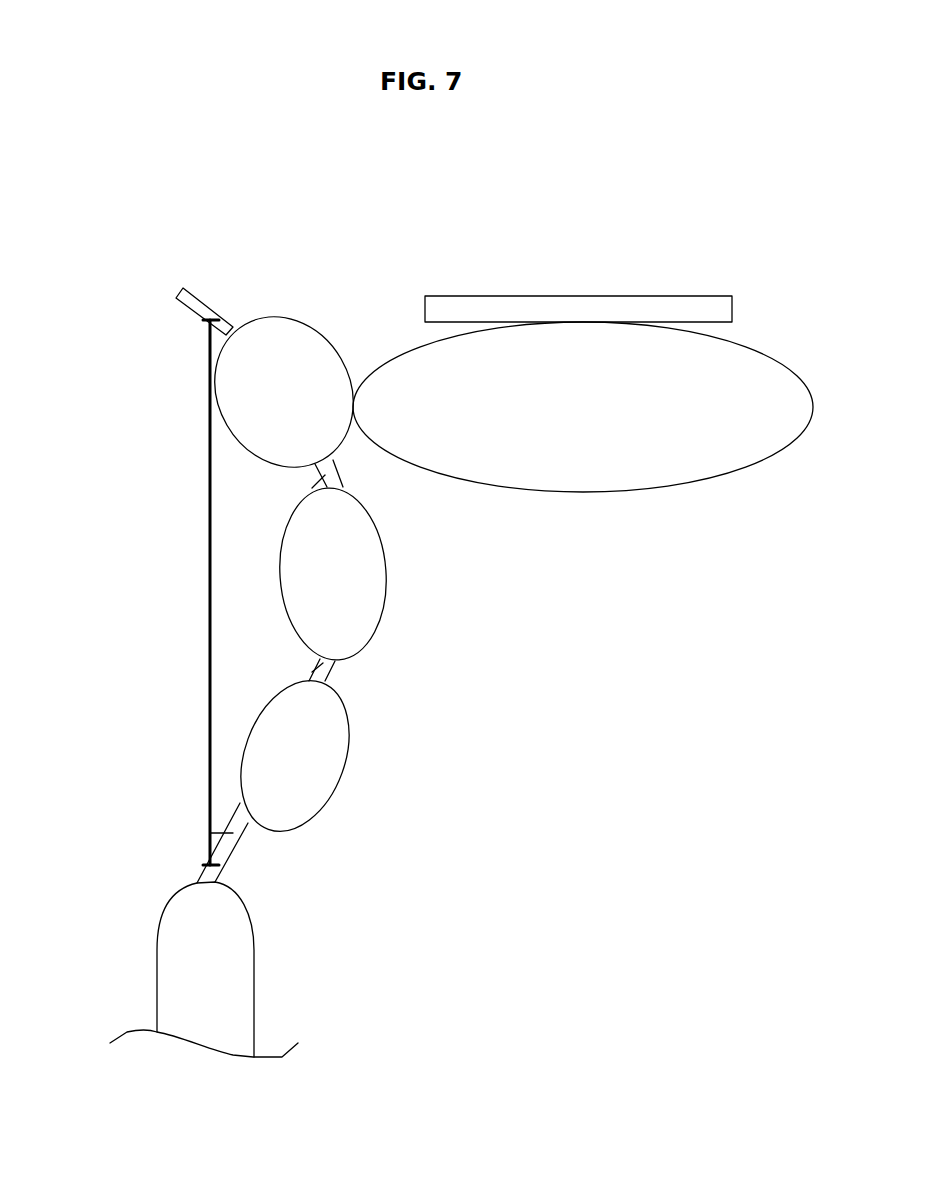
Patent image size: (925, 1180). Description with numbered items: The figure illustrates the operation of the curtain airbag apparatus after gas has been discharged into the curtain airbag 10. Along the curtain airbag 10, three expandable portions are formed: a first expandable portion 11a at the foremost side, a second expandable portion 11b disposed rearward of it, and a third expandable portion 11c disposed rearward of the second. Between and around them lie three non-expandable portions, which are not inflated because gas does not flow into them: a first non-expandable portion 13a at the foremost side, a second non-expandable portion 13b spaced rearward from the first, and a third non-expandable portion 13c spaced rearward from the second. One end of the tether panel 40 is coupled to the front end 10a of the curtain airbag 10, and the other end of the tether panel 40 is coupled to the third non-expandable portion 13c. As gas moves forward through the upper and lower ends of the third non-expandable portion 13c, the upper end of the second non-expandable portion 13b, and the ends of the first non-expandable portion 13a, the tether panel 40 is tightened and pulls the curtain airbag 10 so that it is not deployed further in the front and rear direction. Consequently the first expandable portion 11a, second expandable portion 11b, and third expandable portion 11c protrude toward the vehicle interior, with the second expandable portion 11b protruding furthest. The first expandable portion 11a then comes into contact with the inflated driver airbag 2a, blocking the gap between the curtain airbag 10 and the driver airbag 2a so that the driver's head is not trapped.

The curtain airbag 10 is at (317, 334).
The front end of the curtain airbag 10a is at (194, 288).
The first expandable portion 11a is at (262, 350).
The second expandable portion 11b is at (342, 550).
The third expandable portion 11c is at (300, 755).
The first non-expandable portion 13a is at (312, 486).
The second non-expandable portion 13b is at (295, 680).
The third non-expandable portion 13c is at (210, 833).
The tether panel 40 is at (210, 597).
The driver airbag 2a is at (757, 376).